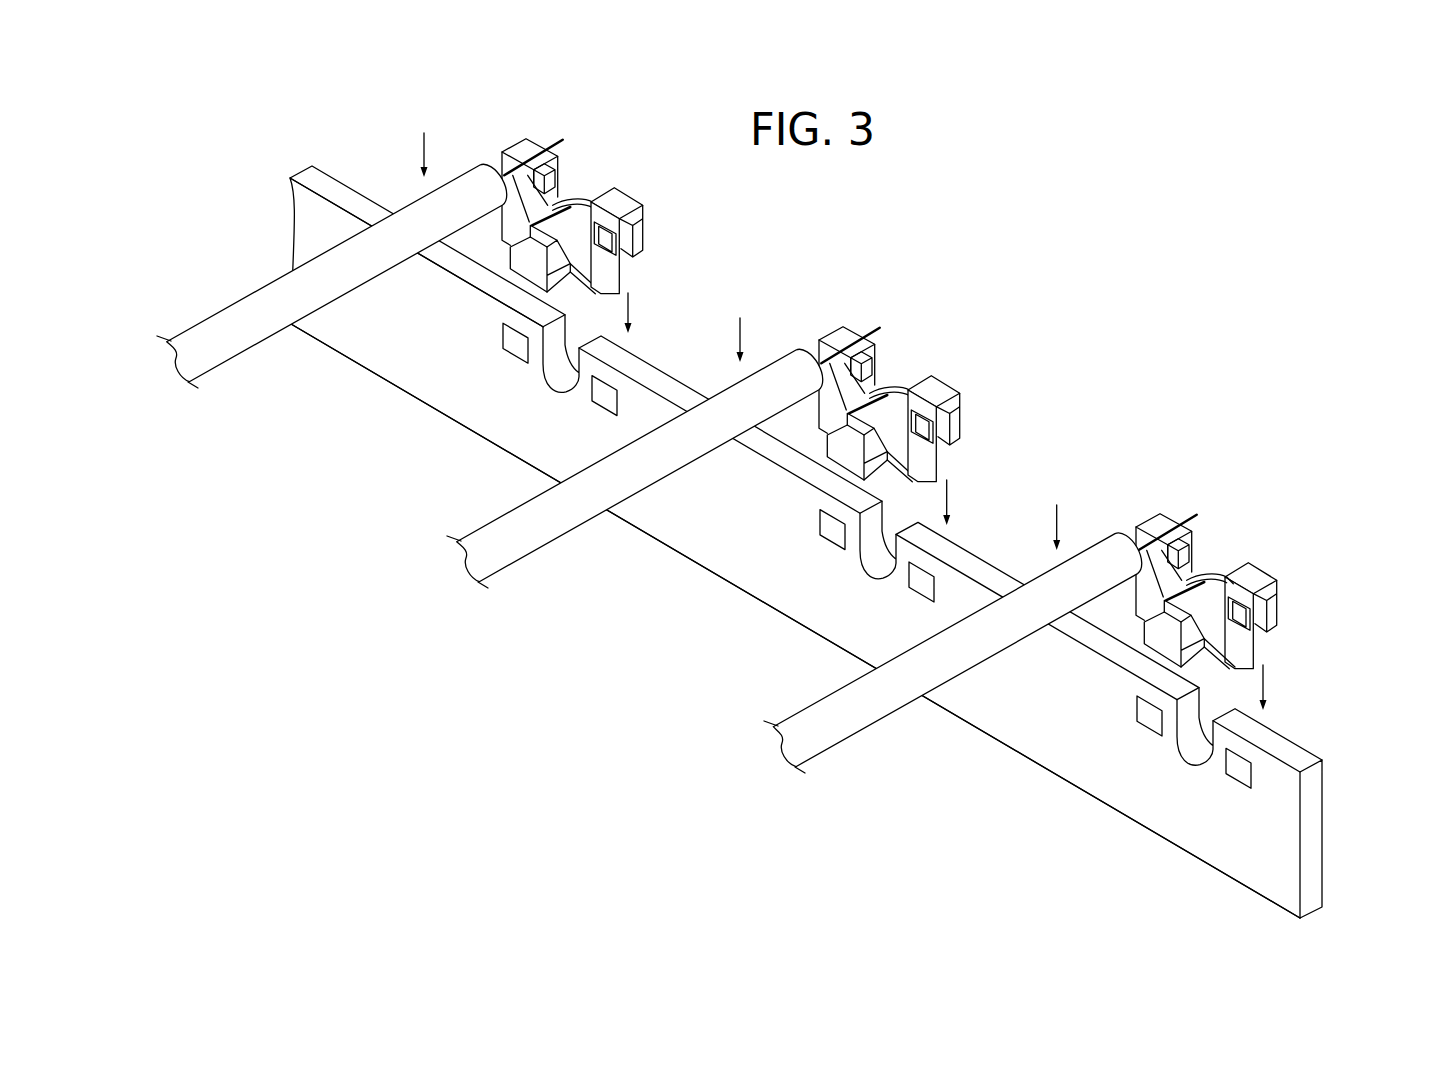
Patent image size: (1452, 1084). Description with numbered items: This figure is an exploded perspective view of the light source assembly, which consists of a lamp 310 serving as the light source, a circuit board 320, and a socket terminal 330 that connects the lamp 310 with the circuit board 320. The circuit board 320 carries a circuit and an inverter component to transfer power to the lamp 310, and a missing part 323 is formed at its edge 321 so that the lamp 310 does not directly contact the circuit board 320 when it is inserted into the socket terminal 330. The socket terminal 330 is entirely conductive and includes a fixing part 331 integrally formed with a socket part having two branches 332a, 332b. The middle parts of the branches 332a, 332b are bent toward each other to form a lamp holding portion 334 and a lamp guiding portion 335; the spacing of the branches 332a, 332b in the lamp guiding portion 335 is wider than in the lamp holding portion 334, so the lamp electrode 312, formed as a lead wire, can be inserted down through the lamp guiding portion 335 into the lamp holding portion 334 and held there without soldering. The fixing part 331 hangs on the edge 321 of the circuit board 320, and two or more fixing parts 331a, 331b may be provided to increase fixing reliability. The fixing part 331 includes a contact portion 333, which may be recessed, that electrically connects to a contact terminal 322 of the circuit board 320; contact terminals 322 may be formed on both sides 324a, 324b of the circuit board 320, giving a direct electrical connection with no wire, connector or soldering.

The lamp 310 is at (649, 478).
The lamp electrode 312 is at (1140, 532).
The circuit board 320 is at (810, 542).
The edge of the circuit board 321 is at (657, 362).
The contact terminal 322 is at (1242, 767).
The missing part 323 is at (878, 548).
The side of the circuit board 324a is at (1120, 797).
The side of the circuit board 324b is at (1318, 842).
The socket terminal 330 is at (937, 404).
The fixing part 331 is at (1221, 561).
The fixing part 331a is at (1167, 521).
The fixing part 331b is at (1265, 591).
The branch 332a is at (1267, 585).
The branch 332b is at (1262, 607).
The contact portion 333 is at (932, 432).
The lamp holding portion 334 is at (833, 410).
The lamp guiding portion 335 is at (873, 373).